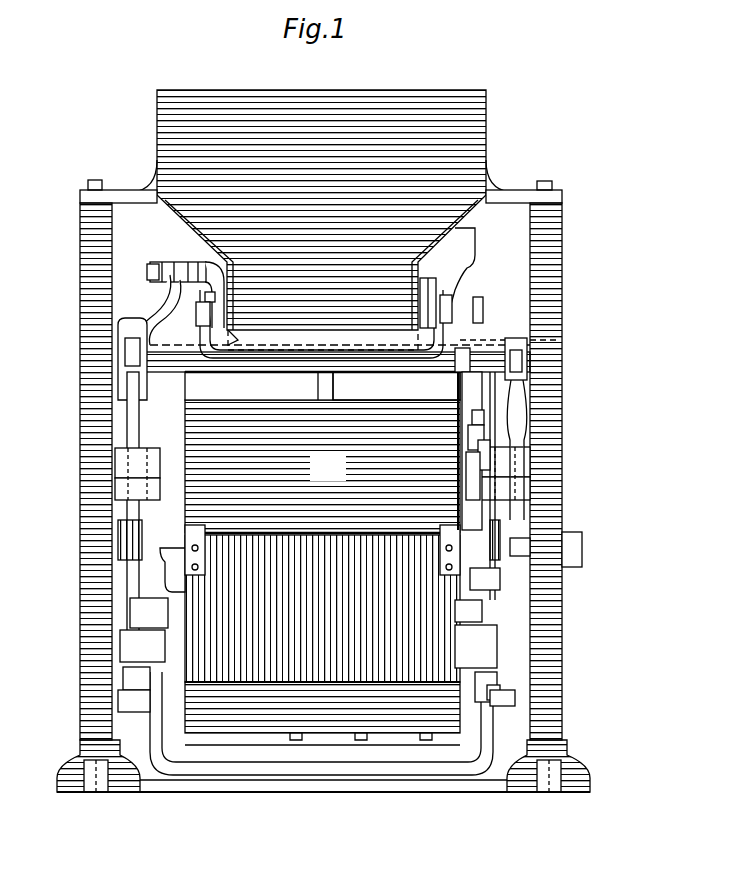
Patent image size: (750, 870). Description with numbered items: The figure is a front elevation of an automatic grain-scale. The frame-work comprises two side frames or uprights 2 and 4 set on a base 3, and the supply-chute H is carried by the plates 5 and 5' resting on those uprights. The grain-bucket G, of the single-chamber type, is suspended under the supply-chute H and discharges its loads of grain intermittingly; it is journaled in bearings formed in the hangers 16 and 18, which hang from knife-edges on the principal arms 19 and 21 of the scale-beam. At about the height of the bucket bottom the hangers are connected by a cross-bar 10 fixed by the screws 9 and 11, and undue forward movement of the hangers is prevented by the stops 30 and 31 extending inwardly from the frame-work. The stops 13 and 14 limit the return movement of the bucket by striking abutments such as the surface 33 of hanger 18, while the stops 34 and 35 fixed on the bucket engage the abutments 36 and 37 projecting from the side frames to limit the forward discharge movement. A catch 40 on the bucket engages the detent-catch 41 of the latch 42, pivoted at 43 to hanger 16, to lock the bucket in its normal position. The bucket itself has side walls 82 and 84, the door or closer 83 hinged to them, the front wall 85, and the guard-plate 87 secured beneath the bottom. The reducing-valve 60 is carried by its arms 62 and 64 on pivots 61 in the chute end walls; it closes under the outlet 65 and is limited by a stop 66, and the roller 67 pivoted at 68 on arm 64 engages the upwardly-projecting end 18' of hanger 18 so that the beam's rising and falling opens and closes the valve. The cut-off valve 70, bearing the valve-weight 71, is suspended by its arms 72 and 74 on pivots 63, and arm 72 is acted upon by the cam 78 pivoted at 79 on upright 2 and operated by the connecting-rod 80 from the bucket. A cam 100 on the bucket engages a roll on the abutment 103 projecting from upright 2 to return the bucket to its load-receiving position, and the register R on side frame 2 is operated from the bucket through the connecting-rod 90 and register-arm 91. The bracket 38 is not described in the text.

The supply-chute H is at (348, 108).
The grain-bucket G is at (322, 466).
The register R is at (582, 551).
The upright 2 is at (546, 418).
The base 3 is at (248, 782).
The upright 4 is at (96, 403).
The plate 5 is at (524, 174).
The plate 5' is at (118, 175).
The screw 9 is at (500, 690).
The cross-bar 10 is at (332, 763).
The screw 11 is at (125, 680).
The stop 13 is at (490, 624).
The stop 14 is at (148, 610).
The hanger 16 is at (520, 412).
The hanger 18 is at (147, 506).
The upwardly-projecting end of hanger 18' is at (149, 310).
The principal arm of scale-beam 19 is at (522, 362).
The principal arm of scale-beam 21 is at (119, 366).
The stop 30 is at (498, 702).
The stop 31 is at (138, 696).
The abutment 33 is at (325, 655).
The stop 34 is at (168, 552).
The stop 35 is at (429, 593).
The abutment 36 is at (440, 534).
The abutment 37 is at (148, 643).
The bracket 38 is at (196, 533).
The catch 40 is at (470, 490).
The detent-catch 41 is at (480, 457).
The latch 42 is at (478, 430).
The pivot of latch 43 is at (474, 445).
The reducing-valve 60 is at (312, 342).
The pivot 61 is at (214, 266).
The arm of reducing-valve 62 is at (452, 300).
The pivot 63 is at (197, 315).
The arm of reducing-valve 64 is at (205, 300).
The outlet of chute 65 is at (287, 322).
The stop 66 is at (237, 345).
The roller 67 is at (163, 262).
The roller pivot 68 is at (151, 268).
The cut-off valve 70 is at (396, 386).
The valve-weight 71 is at (466, 246).
The arm of cut-off valve 72 is at (460, 360).
The arm of cut-off valve 74 is at (215, 330).
The cam 78 is at (472, 451).
The cam pivot 79 is at (548, 331).
The connecting-rod 80 is at (492, 413).
The side wall of bucket 82 is at (457, 389).
The door 83 is at (445, 640).
The side wall of bucket 84 is at (226, 389).
The front wall of bucket 85 is at (390, 410).
The guard-plate 87 is at (418, 718).
The connecting-rod 90 is at (496, 577).
The register-arm 91 is at (530, 545).
The cam 100 is at (128, 521).
The abutment 103 is at (124, 460).